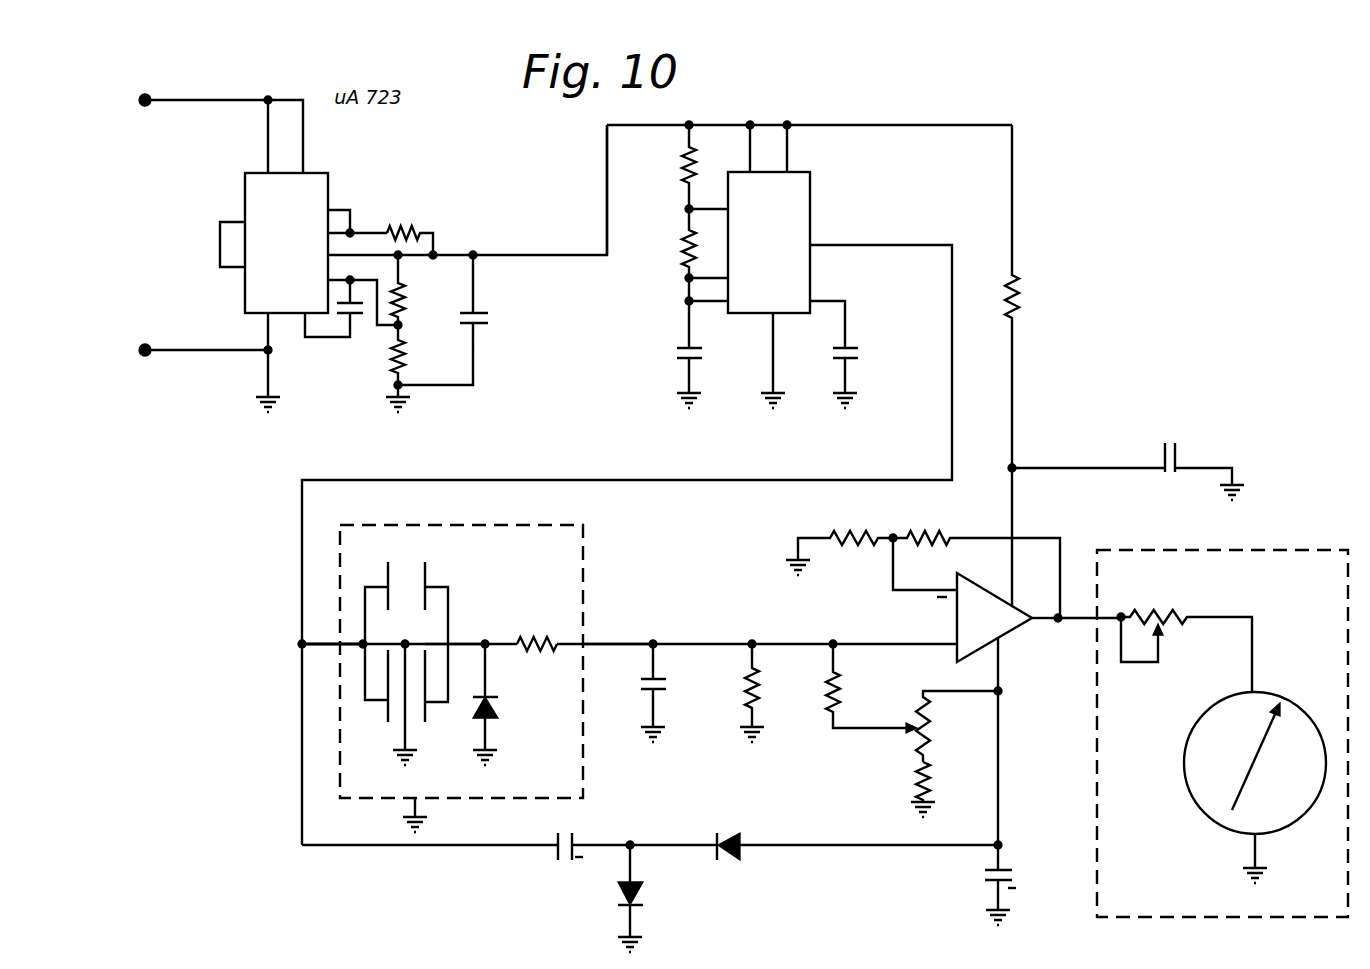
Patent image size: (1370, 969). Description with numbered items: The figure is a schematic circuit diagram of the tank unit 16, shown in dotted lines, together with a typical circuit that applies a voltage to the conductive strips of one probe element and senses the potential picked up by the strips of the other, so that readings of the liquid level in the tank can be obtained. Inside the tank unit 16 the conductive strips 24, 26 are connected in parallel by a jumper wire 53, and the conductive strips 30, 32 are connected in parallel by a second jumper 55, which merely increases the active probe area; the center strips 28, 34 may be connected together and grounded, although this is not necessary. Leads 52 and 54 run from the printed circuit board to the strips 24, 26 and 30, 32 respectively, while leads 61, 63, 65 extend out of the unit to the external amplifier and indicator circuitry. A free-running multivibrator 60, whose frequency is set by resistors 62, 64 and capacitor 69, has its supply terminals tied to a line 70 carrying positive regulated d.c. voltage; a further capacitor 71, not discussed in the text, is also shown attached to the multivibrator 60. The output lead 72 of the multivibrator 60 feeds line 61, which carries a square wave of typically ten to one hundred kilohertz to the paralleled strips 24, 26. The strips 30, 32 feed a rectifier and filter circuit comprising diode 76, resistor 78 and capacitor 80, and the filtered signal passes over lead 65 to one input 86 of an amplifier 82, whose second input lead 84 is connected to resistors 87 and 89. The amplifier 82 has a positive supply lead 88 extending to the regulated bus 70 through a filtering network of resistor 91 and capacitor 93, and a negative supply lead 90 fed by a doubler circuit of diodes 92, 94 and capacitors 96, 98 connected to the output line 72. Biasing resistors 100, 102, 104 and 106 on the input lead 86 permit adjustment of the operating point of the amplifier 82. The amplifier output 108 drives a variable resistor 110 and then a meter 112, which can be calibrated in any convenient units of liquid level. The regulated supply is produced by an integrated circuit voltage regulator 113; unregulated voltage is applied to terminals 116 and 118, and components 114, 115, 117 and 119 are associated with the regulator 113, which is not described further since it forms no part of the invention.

The tank unit 16 is at (595, 559).
The conductive strip 24 is at (387, 572).
The conductive strip 26 is at (387, 710).
The center strip 28 is at (387, 652).
The conductive strip 30 is at (427, 713).
The conductive strip 32 is at (427, 573).
The center strip 34 is at (435, 623).
The lead 52 is at (352, 650).
The jumper wire 53 is at (324, 646).
The lead 54 is at (463, 643).
The second jumper 55 is at (461, 646).
The free-running multivibrator 60 is at (820, 208).
The line 61 is at (330, 643).
The resistor 62 is at (686, 151).
The lead 63 is at (420, 808).
The resistor 64 is at (686, 251).
The lead 65 is at (623, 642).
The capacitor 69 is at (676, 354).
The line 70 is at (607, 184).
The control voltage capacitor 71 is at (852, 348).
The output lead 72 is at (865, 246).
The diode 76 is at (500, 705).
The resistor 78 is at (550, 635).
The capacitor 80 is at (645, 693).
The amplifier 82 is at (987, 600).
The second input lead 84 is at (935, 588).
The input lead 86 is at (917, 644).
The resistor 87 is at (853, 526).
The positive supply lead 88 is at (1013, 574).
The resistor 89 is at (935, 527).
The negative supply lead 90 is at (1000, 668).
The resistor 91 is at (1020, 287).
The diode 92 is at (644, 891).
The capacitor 93 is at (1160, 448).
The diode 94 is at (727, 860).
The capacitor 96 is at (573, 839).
The capacitor 98 is at (985, 883).
The biasing resistor 100 is at (757, 700).
The biasing resistor 102 is at (840, 691).
The biasing resistor 104 is at (926, 720).
The biasing resistor 106 is at (927, 782).
The output 108 is at (1085, 620).
The variable resistor 110 is at (1168, 612).
The meter 112 is at (1303, 713).
The integrated circuit voltage regulator 113 is at (233, 290).
The component 114 is at (408, 355).
The component 115 is at (406, 290).
The terminal 116 is at (203, 98).
The component 117 is at (482, 325).
The terminal 118 is at (210, 350).
The component 119 is at (357, 323).